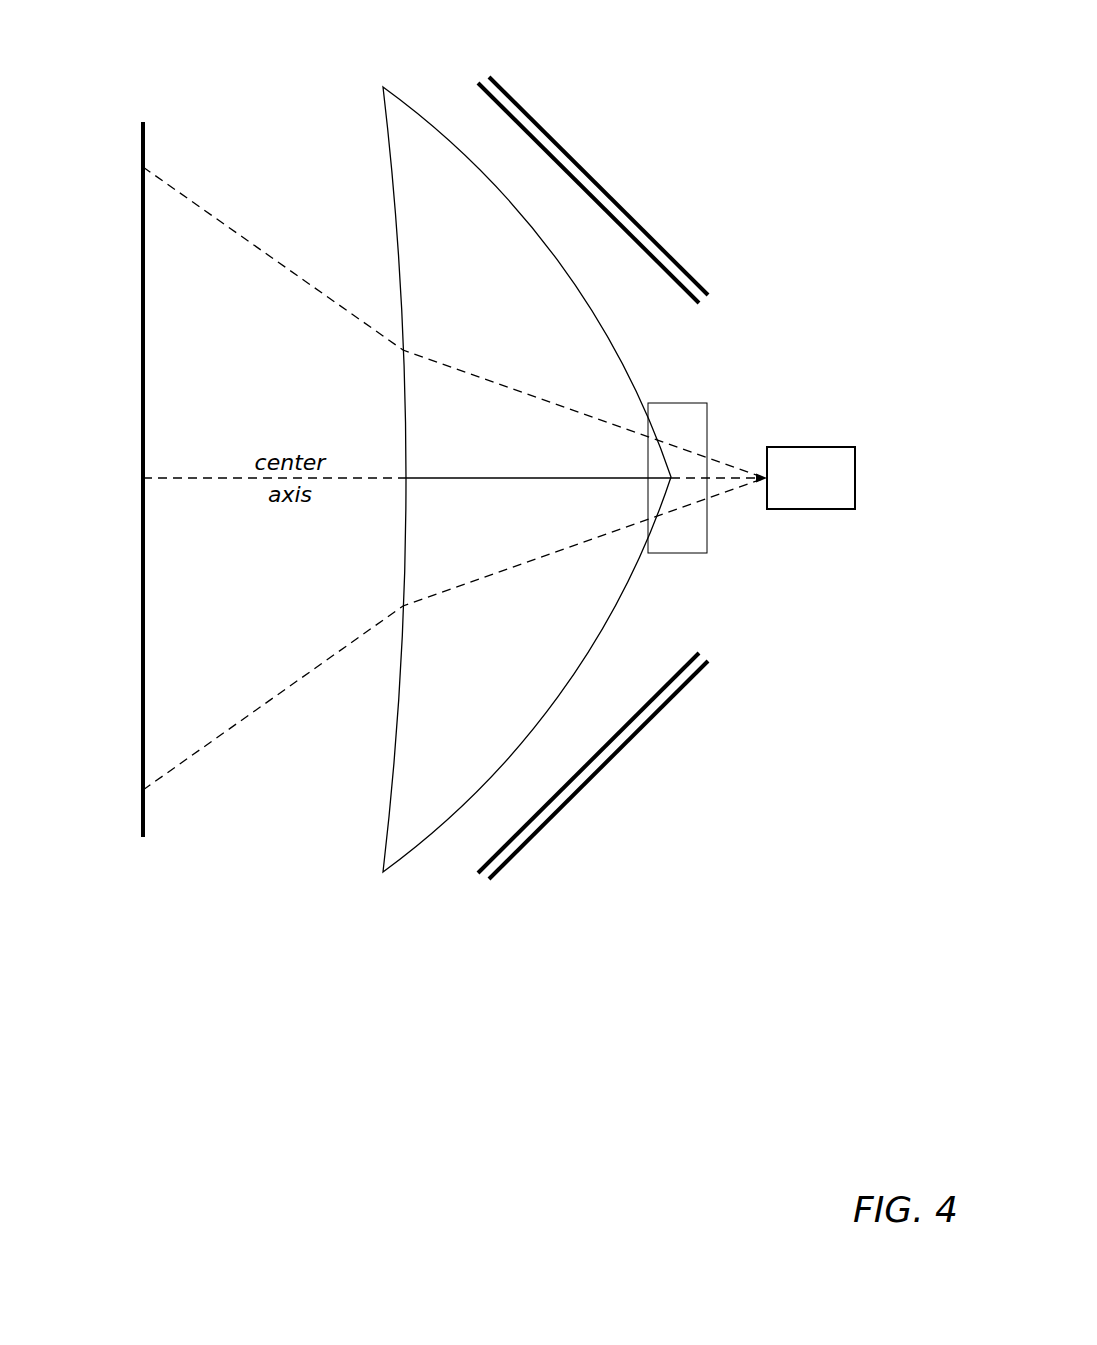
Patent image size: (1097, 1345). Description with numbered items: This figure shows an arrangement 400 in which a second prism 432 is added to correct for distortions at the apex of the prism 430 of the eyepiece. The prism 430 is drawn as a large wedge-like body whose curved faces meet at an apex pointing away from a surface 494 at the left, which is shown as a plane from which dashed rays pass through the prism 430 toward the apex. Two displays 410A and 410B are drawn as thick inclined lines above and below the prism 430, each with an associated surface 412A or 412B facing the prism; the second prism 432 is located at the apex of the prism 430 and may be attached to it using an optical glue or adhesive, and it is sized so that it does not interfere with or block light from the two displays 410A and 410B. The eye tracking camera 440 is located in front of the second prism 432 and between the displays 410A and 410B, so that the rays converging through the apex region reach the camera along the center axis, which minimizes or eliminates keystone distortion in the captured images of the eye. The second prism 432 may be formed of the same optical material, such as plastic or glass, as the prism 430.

The optical system 400 is at (777, 80).
The image plane / display surface 494 is at (140, 148).
The prism 430 is at (527, 479).
The display 410A is at (587, 167).
The first reflective surface 412A is at (478, 83).
The display 410B is at (573, 803).
The second reflective surface 412B is at (482, 872).
The second prism 432 is at (695, 402).
The eye tracking camera 440 is at (811, 478).